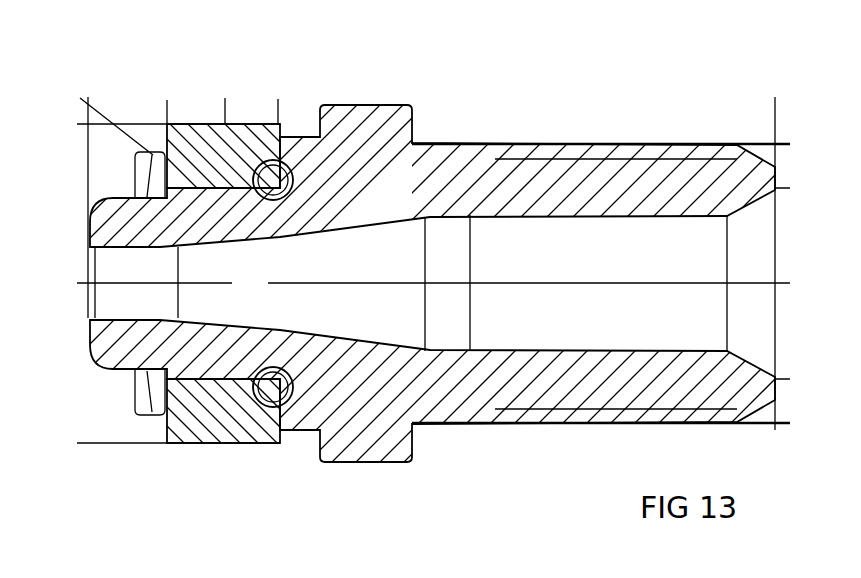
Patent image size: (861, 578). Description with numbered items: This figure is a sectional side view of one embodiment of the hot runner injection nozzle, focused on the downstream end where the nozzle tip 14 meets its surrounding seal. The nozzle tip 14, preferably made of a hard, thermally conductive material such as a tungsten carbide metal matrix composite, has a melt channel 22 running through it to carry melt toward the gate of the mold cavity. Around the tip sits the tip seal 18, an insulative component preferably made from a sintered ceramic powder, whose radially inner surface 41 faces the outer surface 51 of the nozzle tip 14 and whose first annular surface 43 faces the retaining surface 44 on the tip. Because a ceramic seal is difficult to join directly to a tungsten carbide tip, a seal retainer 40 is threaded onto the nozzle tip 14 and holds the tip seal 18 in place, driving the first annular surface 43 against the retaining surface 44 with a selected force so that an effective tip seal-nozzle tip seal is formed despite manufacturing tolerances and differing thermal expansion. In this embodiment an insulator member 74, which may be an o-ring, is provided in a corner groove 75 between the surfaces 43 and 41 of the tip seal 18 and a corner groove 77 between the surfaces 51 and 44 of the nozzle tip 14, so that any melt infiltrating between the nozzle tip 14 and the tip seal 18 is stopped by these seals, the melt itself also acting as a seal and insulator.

The nozzle tip 14 is at (465, 402).
The melt channel 22 is at (555, 340).
The insulator member 74 is at (318, 342).
The outer surface 51 is at (223, 168).
The tip seal 18 is at (240, 420).
The radially inner surface 41 is at (205, 378).
The seal retainer 40 is at (137, 393).
The retaining surface 44 is at (300, 423).
The first annular surface 43 is at (313, 388).
The corner groove 75 is at (283, 390).
The corner groove 77 is at (250, 373).